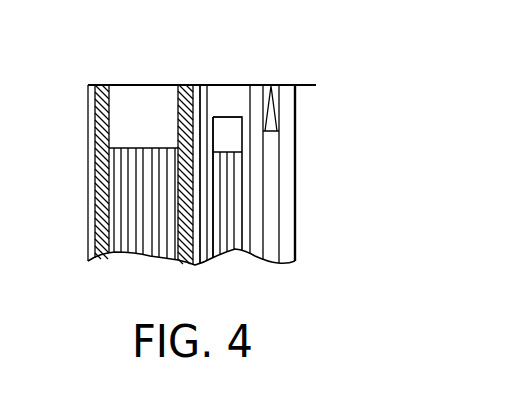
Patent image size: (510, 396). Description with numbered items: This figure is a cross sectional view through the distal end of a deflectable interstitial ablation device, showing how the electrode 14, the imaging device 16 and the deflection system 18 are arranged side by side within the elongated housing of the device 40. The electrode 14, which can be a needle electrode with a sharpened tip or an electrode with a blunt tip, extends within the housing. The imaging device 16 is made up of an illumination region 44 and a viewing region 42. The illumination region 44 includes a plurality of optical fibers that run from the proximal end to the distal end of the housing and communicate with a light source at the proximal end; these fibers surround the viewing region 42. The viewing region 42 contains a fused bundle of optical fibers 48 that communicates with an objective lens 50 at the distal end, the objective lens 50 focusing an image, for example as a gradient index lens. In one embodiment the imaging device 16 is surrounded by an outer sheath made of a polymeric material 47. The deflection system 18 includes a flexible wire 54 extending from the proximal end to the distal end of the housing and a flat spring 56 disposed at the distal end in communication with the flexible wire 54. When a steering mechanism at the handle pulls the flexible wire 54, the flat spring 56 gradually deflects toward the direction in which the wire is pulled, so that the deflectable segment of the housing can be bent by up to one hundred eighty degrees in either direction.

The electrode 14 is at (270, 152).
The imaging device 16 is at (121, 85).
The deflection system 18 is at (224, 130).
The semiconductor substrate 40 is at (270, 228).
The viewing region 42 is at (112, 91).
The illumination region 44 is at (183, 85).
The polymeric material 47 is at (88, 127).
The fused bundle of optical fibers 48 is at (135, 192).
The objective lens 50 is at (147, 103).
The flexible wire 54 is at (237, 252).
The flat spring 56 is at (233, 124).